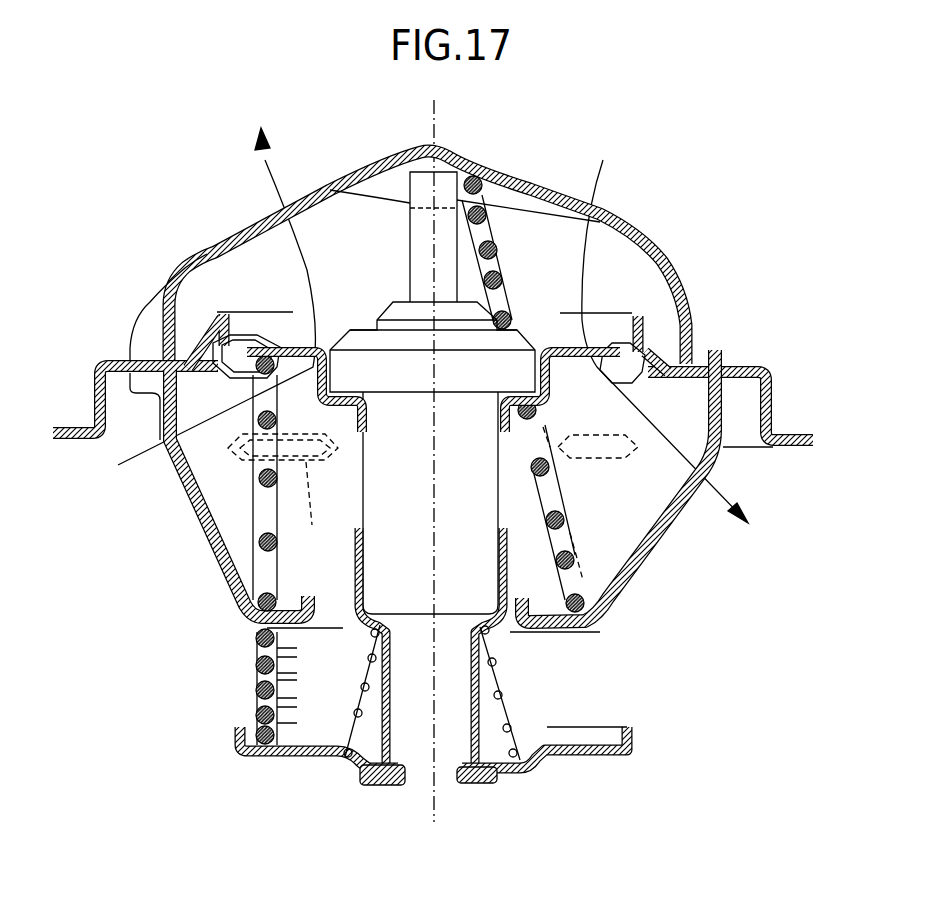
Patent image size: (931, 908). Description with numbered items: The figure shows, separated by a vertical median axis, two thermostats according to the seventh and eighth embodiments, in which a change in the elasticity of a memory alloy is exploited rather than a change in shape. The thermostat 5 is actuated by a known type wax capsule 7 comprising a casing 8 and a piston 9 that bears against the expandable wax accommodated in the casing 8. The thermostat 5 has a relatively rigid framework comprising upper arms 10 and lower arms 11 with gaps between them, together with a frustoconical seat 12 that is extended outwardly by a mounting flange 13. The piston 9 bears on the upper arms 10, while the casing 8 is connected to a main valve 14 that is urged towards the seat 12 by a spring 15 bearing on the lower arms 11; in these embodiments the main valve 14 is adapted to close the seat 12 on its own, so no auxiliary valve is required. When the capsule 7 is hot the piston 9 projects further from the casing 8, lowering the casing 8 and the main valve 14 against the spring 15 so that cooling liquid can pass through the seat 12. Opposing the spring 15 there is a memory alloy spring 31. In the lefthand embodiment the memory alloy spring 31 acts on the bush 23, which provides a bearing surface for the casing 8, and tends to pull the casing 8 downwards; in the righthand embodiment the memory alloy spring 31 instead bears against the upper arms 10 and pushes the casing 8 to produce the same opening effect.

The thermostat 5 is at (690, 240).
The wax capsule 7 is at (503, 503).
The casing 8 is at (407, 492).
The piston 9 is at (422, 235).
The upper arms 10 is at (250, 233).
The lower arms 11 is at (210, 523).
The frustoconical seat 12 is at (210, 340).
The mounting flange 13 is at (72, 422).
The main valve 14 is at (285, 345).
The spring 15 is at (258, 548).
The bush 23 is at (367, 633).
The memory alloy spring 31 is at (257, 662).